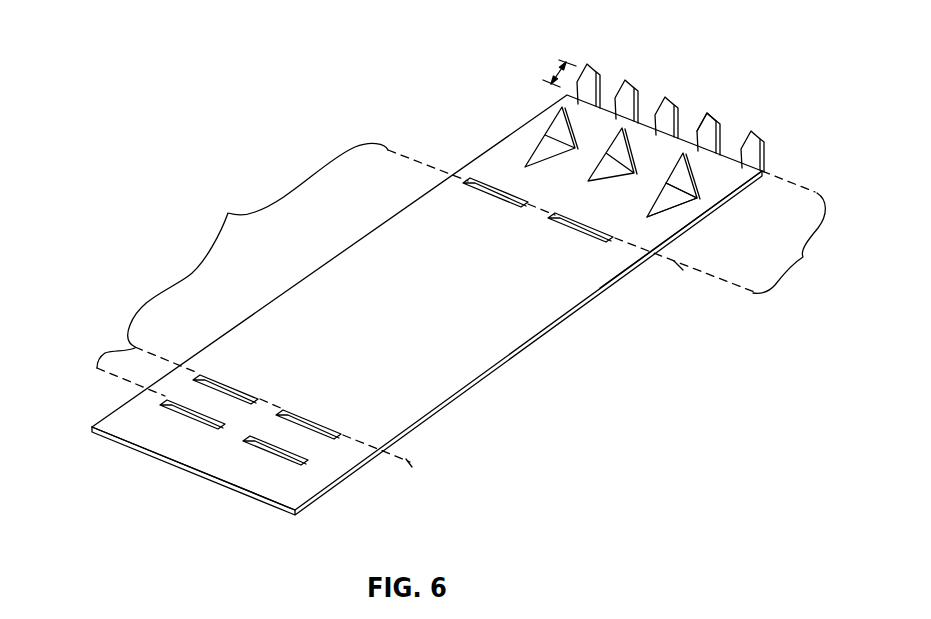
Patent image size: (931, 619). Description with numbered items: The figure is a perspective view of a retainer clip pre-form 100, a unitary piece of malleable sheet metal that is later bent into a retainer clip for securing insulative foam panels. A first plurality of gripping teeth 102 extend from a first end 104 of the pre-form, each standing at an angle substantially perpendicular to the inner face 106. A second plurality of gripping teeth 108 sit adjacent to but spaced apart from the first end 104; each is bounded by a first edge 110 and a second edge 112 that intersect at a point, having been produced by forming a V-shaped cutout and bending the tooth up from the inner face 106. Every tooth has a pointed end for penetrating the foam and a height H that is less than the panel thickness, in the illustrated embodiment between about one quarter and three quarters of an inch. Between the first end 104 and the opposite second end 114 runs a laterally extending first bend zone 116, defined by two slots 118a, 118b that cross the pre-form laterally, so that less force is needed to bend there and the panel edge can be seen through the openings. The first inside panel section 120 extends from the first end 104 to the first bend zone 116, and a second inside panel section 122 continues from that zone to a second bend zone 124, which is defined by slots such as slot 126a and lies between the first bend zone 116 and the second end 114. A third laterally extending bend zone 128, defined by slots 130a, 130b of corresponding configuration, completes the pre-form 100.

The retainer clip pre-form 100 is at (163, 146).
The first plurality of gripping teeth 102 is at (590, 61).
The first end 104 is at (698, 225).
The inner face 106 is at (488, 358).
The second plurality of gripping teeth 108 is at (550, 128).
The first edge 110 is at (698, 187).
The second edge 112 is at (712, 118).
The second end 114 is at (217, 487).
The first bend zone 116 is at (679, 266).
The slot 118a is at (578, 234).
The slot 118b is at (493, 200).
The first inside panel section 120 is at (803, 257).
The second inside panel section 122 is at (228, 213).
The second bend zone 124 is at (410, 463).
The slot 126a is at (233, 382).
The third bend zone 128 is at (105, 353).
The slot 130a is at (285, 463).
The slot 130b is at (187, 417).
The height H is at (556, 63).